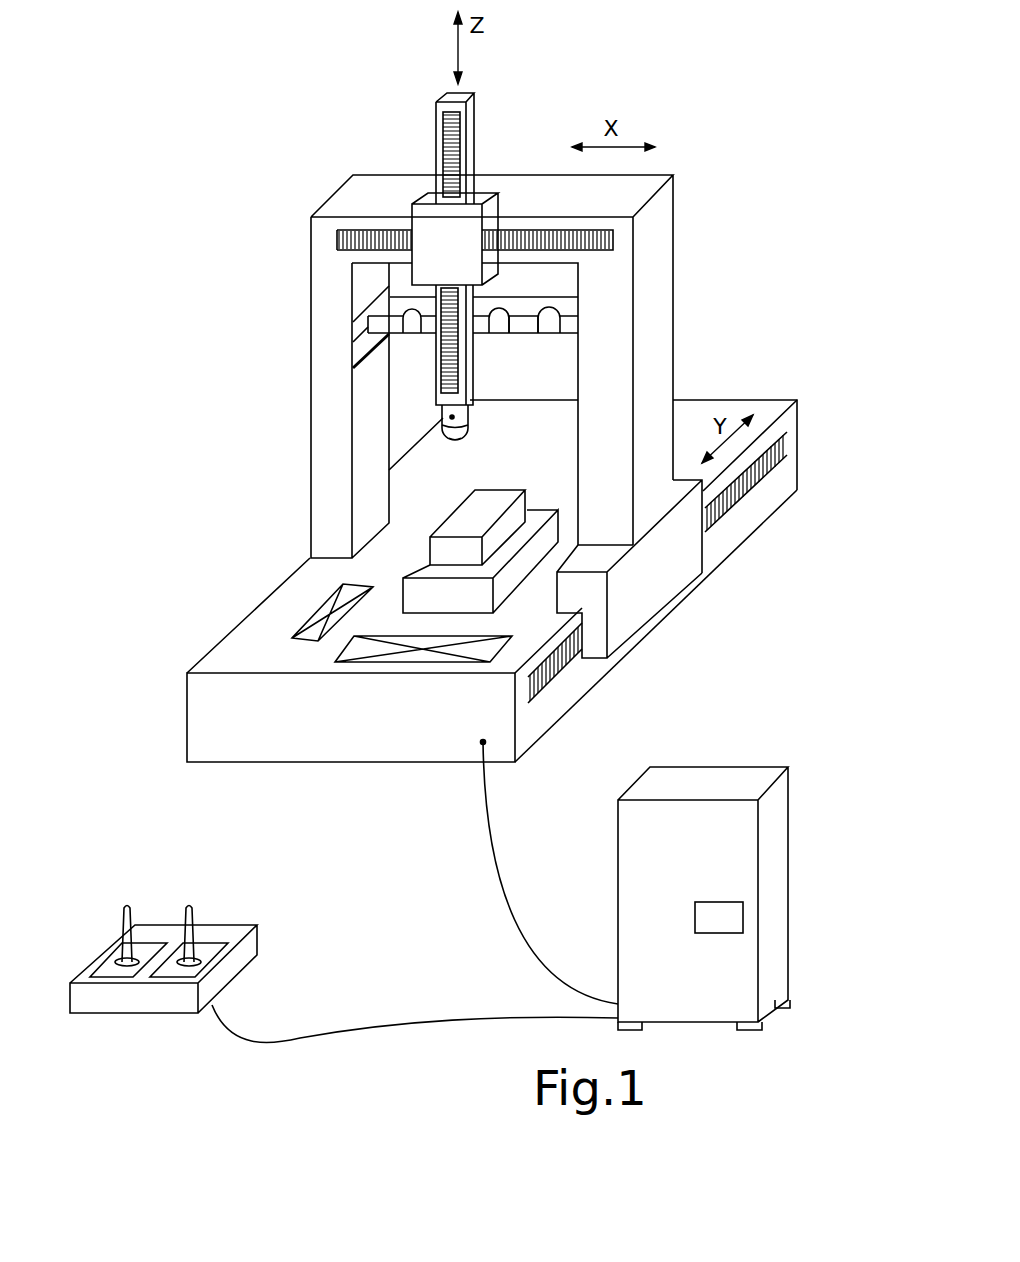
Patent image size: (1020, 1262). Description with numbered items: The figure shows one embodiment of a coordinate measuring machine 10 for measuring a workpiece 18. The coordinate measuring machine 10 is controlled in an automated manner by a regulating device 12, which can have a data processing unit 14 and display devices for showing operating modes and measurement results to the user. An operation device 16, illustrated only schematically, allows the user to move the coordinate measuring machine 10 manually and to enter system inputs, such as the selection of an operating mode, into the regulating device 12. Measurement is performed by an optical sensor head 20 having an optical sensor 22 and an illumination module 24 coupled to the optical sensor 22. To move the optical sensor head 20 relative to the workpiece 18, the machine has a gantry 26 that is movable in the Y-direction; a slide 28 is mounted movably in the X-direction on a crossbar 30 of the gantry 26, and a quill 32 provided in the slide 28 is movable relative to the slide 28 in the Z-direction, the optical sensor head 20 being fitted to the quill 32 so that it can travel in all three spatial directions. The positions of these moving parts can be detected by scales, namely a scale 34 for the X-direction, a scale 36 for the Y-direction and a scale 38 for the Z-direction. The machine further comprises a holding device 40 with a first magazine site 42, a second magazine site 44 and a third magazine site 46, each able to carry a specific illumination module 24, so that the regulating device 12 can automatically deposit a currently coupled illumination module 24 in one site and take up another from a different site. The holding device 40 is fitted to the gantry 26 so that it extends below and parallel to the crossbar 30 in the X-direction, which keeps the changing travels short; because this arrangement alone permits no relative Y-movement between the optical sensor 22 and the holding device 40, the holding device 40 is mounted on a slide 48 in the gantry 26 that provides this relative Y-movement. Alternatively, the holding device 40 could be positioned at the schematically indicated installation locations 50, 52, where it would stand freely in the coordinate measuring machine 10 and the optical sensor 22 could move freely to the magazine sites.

The coordinate measuring machine 10 is at (283, 165).
The regulating device 12 is at (712, 785).
The data processing unit 14 is at (722, 915).
The operation device 16 is at (252, 896).
The workpiece 18 is at (480, 520).
The optical sensor head 20 is at (490, 411).
The optical sensor 22 is at (450, 418).
The illumination module 24 is at (462, 436).
The gantry 26 is at (323, 333).
The slide 28 is at (427, 197).
The crossbar 30 is at (620, 194).
The quill 32 is at (447, 93).
The scale for the X-direction 34 is at (613, 238).
The scale for the Y-direction 36 is at (735, 487).
The scale for the Z-direction 38 is at (462, 120).
The holding device 40 is at (575, 305).
The first magazine site 42 is at (548, 318).
The second magazine site 44 is at (501, 308).
The third magazine site 46 is at (403, 315).
The slide 48 is at (367, 344).
The installation location 50 is at (313, 617).
The installation location 52 is at (416, 660).